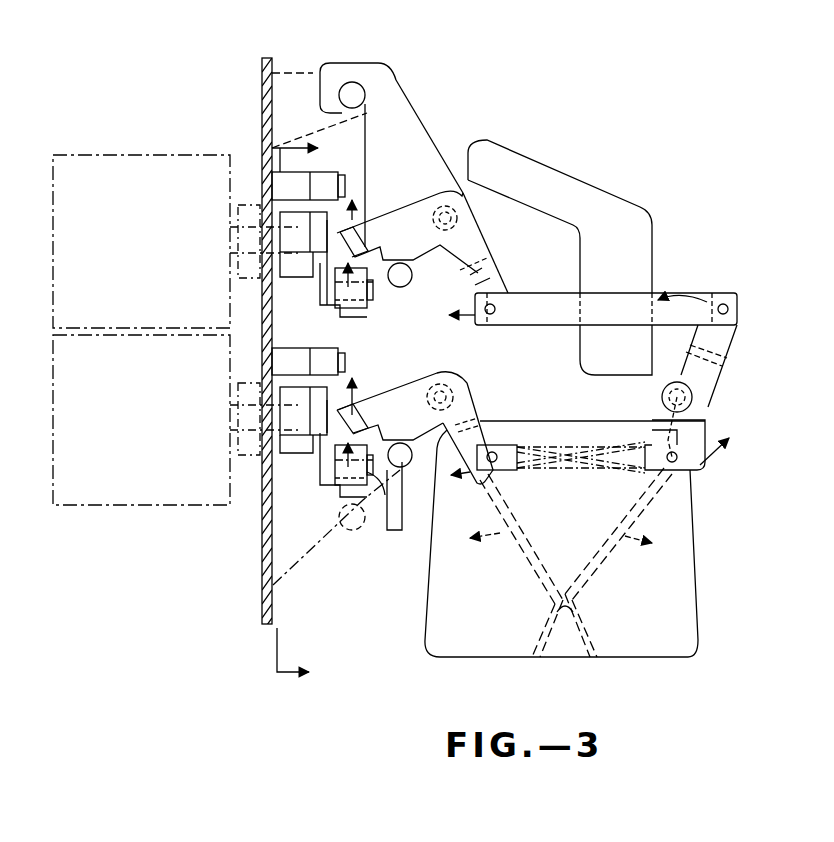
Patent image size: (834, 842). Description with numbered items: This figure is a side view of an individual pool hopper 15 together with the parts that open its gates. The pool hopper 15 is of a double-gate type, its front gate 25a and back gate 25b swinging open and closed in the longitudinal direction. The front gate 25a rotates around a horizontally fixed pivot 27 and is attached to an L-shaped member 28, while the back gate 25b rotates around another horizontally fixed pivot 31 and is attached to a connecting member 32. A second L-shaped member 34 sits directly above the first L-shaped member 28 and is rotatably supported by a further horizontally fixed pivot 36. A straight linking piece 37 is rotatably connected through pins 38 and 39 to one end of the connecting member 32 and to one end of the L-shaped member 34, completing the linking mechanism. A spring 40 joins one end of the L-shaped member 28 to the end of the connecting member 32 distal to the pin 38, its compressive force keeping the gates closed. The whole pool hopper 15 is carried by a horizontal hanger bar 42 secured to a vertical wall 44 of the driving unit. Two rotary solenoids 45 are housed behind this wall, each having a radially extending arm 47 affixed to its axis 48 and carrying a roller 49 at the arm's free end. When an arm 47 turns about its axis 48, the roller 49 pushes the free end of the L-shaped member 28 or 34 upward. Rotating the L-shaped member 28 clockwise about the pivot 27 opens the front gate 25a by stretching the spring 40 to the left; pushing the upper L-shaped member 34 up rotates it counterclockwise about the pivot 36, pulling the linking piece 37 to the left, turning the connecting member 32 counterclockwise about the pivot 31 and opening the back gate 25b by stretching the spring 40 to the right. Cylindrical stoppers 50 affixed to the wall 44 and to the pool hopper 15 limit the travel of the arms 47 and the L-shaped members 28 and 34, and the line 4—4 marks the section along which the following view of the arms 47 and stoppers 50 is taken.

The line 4— 4 is at (306, 412).
The pool hopper 15 is at (716, 179).
The front gate 25a is at (540, 568).
The back gate 25b is at (577, 580).
The pivot 27 is at (463, 392).
The L-shaped member 28 is at (405, 398).
The pivot 31 is at (655, 392).
The connecting member 32 is at (708, 368).
The L-shaped member 34 is at (403, 220).
The pivot 36 is at (453, 195).
The linking piece 37 is at (632, 307).
The pin 38 is at (735, 310).
The pin 39 is at (496, 308).
The spring 40 is at (572, 478).
The hanger bar 42 is at (373, 90).
The vertical wall 44 is at (263, 587).
The rotary solenoid 45 is at (158, 165).
The arm 47 is at (313, 285).
The axis 48 is at (232, 245).
The roller 49 is at (368, 308).
The stopper 50 is at (287, 180).